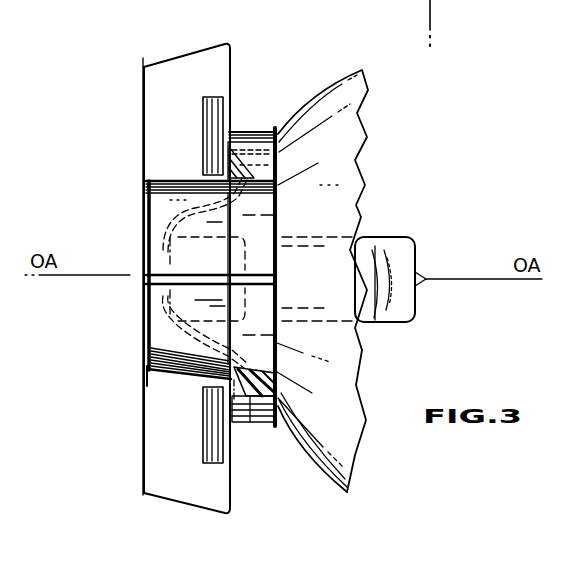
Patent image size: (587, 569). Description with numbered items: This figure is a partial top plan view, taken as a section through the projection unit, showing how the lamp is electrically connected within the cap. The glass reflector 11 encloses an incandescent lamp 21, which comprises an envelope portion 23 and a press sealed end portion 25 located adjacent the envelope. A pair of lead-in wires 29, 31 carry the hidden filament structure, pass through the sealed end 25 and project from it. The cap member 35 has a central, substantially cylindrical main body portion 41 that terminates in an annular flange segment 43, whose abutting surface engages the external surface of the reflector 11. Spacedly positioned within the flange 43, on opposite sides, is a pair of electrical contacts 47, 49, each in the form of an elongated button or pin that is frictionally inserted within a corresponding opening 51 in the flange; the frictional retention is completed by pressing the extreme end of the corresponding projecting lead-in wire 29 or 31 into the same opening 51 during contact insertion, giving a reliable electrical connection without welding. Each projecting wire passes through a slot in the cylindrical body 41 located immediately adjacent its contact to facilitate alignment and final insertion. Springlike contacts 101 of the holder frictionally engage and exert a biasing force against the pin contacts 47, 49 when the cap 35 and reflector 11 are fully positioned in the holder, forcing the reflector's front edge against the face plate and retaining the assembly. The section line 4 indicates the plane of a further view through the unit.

The section line 4- 4 is at (276, 120).
The glass reflector 11 is at (320, 84).
The incandescent lamp 21 is at (434, 252).
The envelope portion 23 is at (385, 243).
The press sealed end portion 25 is at (182, 262).
The lead-in wire 29 is at (191, 196).
The lead-in wire 31 is at (188, 381).
The cap member 35 is at (241, 112).
The cylindrical main body portion 41 is at (148, 382).
The annular flange segment 43 is at (263, 129).
The electrical contact 47 is at (229, 148).
The electrical contact 49 is at (246, 408).
The opening 51 is at (279, 160).
The spring contact 101 is at (203, 111).